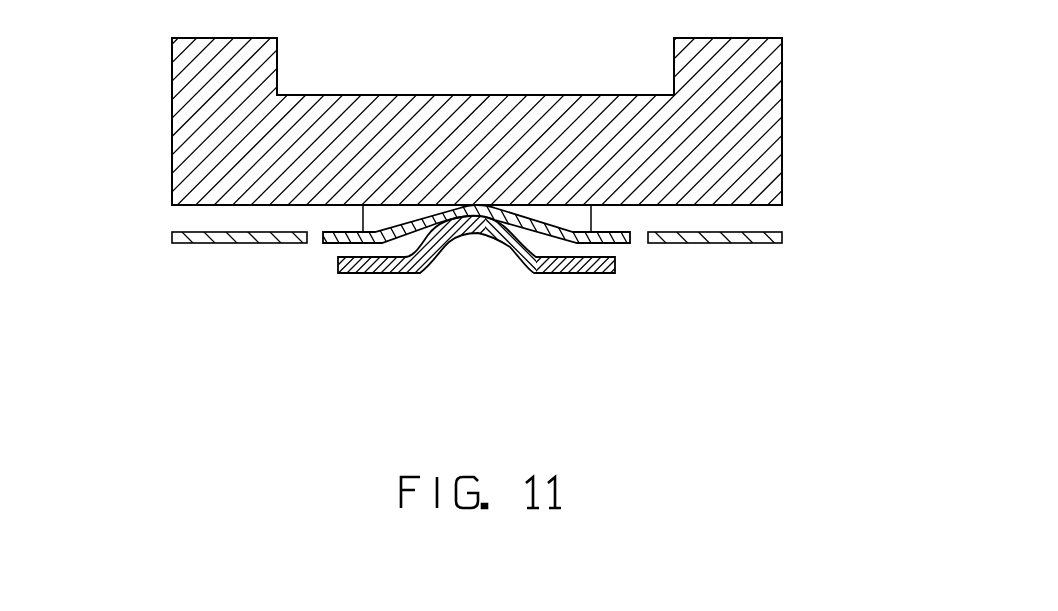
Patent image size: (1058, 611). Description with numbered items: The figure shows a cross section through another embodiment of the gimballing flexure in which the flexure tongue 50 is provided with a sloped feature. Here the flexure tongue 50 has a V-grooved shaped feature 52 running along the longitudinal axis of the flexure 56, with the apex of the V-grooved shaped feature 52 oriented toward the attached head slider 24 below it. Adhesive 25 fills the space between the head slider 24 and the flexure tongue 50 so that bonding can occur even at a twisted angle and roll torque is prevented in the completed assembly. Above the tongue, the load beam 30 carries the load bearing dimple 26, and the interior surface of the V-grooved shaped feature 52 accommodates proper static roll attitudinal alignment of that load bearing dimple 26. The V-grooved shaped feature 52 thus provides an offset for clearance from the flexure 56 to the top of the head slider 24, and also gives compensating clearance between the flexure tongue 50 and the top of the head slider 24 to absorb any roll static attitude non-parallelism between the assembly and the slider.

The head slider 24 is at (198, 137).
The adhesive 25 is at (593, 213).
The load bearing dimple 26 is at (487, 235).
The load beam 30 is at (338, 270).
The flexure tongue 50 is at (328, 231).
The V-grooved shaped feature 52 is at (478, 206).
The flexure 56 is at (783, 234).